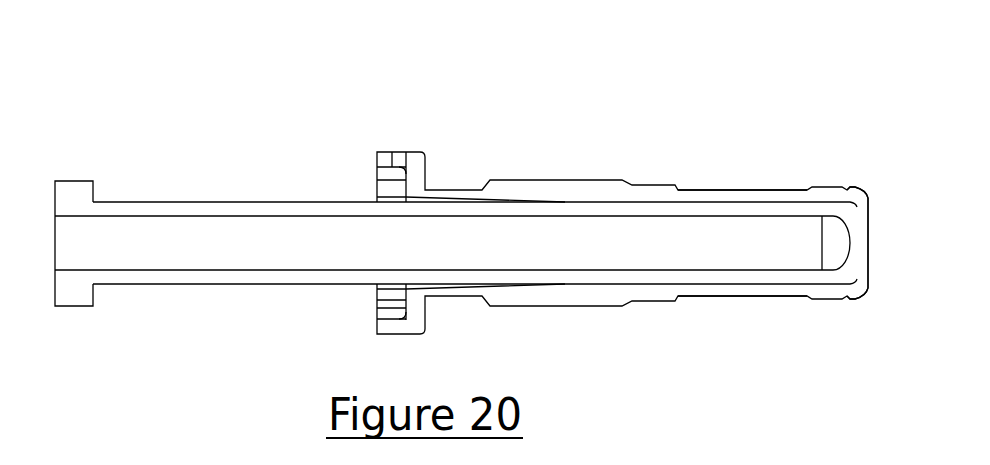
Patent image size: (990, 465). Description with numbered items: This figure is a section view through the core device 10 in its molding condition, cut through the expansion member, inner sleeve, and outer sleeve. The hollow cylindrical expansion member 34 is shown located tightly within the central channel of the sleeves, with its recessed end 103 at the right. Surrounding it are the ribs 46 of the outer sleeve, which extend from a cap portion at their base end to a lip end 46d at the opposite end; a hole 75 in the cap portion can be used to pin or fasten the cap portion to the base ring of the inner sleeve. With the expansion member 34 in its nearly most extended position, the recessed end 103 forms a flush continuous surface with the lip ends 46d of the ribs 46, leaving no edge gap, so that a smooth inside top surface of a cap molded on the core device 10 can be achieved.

The expansion member 34 is at (170, 202).
The core device 10 is at (583, 168).
The hole 75 is at (402, 150).
The ribs of the outer sleeve 46 is at (708, 188).
The lip end 46d is at (868, 198).
The recessed end 103 is at (872, 243).